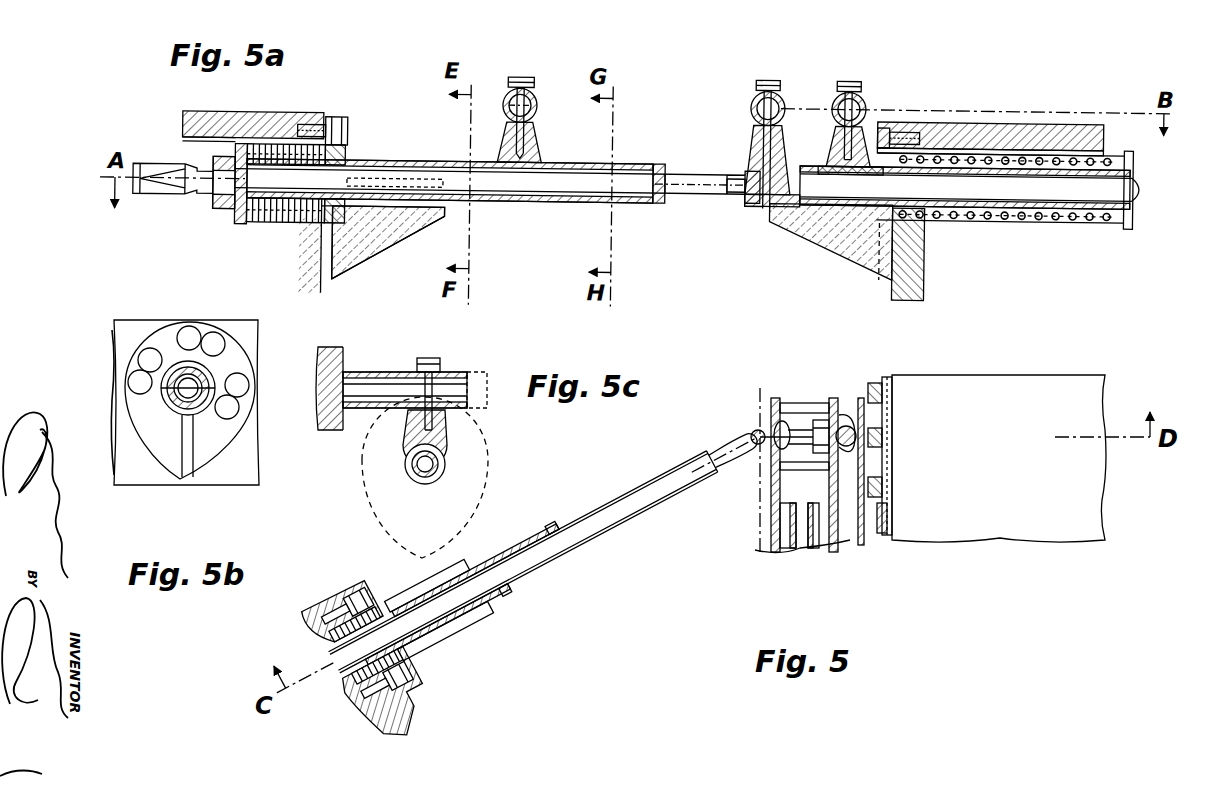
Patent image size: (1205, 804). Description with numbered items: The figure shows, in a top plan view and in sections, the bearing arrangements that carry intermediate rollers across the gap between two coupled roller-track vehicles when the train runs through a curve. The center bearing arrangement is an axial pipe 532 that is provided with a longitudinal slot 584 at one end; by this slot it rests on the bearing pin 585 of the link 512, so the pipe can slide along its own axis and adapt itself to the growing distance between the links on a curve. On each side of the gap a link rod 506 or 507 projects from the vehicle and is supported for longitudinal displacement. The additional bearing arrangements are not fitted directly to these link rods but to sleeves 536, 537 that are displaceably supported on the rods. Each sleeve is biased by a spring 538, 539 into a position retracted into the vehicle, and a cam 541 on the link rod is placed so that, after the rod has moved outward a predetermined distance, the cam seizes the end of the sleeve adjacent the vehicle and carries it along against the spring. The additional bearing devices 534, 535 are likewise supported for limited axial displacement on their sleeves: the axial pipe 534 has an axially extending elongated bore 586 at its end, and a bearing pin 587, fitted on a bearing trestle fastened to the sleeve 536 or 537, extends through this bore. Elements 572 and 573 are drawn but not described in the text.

In FIG. 5A, the link rod 506 is at (1092, 186).
In FIG. 5A, the link rod 507 is at (580, 194).
In FIG. 5C, the link rod 507 is at (428, 484).
In FIG. 5, the link rod 507 is at (650, 516).
In FIG. 5A, the link 512 is at (742, 162).
In FIG. 5, the link 512 is at (740, 432).
In FIG. 5A, the axial pipe 532 is at (753, 95).
In FIG. 5A, the axial pipe 534 is at (840, 97).
In FIG. 5, the axial pipe 534 is at (842, 422).
In FIG. 5A, the additional bearing device 535 is at (505, 93).
In FIG. 5C, the additional bearing device 535 is at (456, 372).
In FIG. 5A, the sleeve 536 is at (1033, 208).
In FIG. 5A, the sleeve 537 is at (408, 156).
In FIG. 5, the sleeve 537 is at (510, 594).
In FIG. 5A, the spring 538 is at (968, 208).
In FIG. 5A, the spring 539 is at (315, 222).
In FIG. 5A, the cam 541 is at (222, 207).
In FIG. 5A, the support block 572 is at (888, 113).
In FIG. 5, the support block 572 is at (885, 382).
In FIG. 5A, the clamping screw 573 is at (355, 101).
In FIG. 5B, the clamping screw 573 is at (172, 465).
In FIG. 5, the clamping screw 573 is at (374, 604).
In FIG. 5, the longitudinal slot 584 is at (760, 428).
In FIG. 5A, the bearing pin 585 is at (752, 126).
In FIG. 5C, the elongated bore 586 is at (422, 358).
In FIG. 5, the elongated bore 586 is at (830, 425).
In FIG. 5A, the bearing pin 587 is at (533, 110).
In FIG. 5, the bearing pin 587 is at (856, 447).